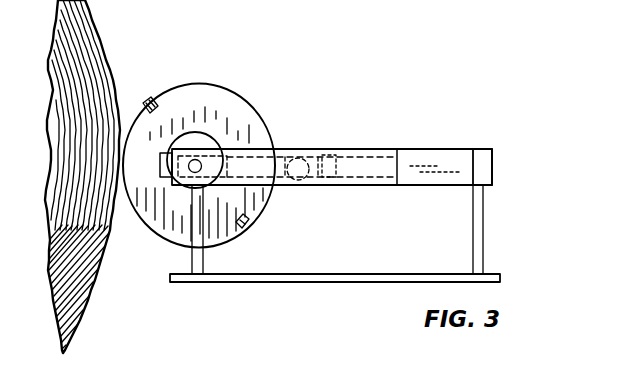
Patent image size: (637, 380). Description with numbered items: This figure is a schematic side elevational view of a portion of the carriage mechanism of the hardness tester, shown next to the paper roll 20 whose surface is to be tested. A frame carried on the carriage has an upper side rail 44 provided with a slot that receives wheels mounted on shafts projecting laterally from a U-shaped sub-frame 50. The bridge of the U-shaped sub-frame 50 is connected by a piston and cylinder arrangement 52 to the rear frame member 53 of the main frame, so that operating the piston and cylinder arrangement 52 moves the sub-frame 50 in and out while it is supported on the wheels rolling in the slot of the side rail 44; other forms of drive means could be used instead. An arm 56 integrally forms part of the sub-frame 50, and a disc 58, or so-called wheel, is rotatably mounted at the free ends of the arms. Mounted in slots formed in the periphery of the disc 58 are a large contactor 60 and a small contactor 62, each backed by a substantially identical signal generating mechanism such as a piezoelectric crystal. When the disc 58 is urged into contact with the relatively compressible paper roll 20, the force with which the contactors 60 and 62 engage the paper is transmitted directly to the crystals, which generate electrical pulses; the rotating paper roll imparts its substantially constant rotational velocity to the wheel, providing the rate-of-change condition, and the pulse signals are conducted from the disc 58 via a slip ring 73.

The paper roll 20 is at (100, 44).
The upper side rail 44 is at (372, 187).
The U-shaped sub-frame 50 is at (332, 148).
The piston and cylinder arrangement 52 is at (438, 153).
The rear frame member 53 is at (488, 165).
The arm 56 is at (168, 173).
The disc 58 is at (225, 93).
The large contactor 60 is at (147, 97).
The small contactor 62 is at (245, 226).
The slip ring 73 is at (217, 140).